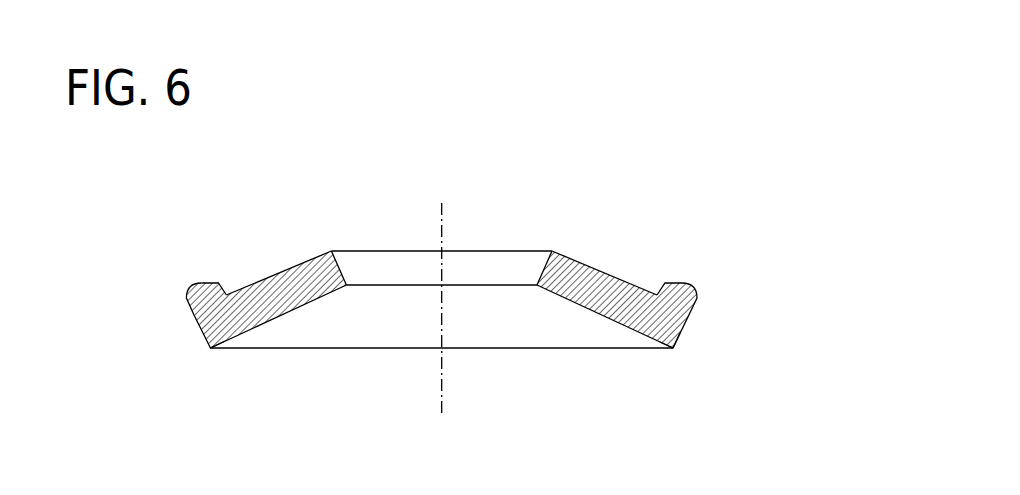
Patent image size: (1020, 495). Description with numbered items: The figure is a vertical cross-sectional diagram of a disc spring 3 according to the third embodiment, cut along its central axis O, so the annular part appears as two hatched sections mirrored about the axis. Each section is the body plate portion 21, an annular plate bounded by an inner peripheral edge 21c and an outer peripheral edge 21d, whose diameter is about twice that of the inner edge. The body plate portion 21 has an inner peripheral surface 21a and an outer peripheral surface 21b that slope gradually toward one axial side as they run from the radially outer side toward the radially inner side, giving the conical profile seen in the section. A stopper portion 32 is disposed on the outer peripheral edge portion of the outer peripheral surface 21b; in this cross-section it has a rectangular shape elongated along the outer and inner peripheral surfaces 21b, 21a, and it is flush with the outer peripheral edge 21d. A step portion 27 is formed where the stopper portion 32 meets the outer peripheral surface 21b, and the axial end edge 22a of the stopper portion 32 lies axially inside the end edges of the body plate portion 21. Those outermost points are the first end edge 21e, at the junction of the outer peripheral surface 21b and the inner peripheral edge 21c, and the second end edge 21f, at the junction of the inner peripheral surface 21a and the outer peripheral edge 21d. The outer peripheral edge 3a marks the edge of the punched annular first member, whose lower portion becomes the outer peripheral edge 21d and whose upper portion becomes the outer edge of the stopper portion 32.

The disc spring 3 is at (708, 185).
The outer peripheral edge 3a is at (185, 305).
The body plate portion 21 is at (616, 275).
The inner peripheral surface 21a is at (296, 308).
The outer peripheral surface 21b is at (270, 278).
The inner peripheral edge 21c is at (340, 268).
The outer peripheral edge 21d is at (193, 335).
The first end edge 21e is at (552, 251).
The second end edge 21f is at (672, 350).
The axial end edge of the stopper portion 22a is at (665, 283).
The step portion 27 is at (223, 292).
The stopper portion 32 is at (696, 285).
The central axis O is at (442, 218).